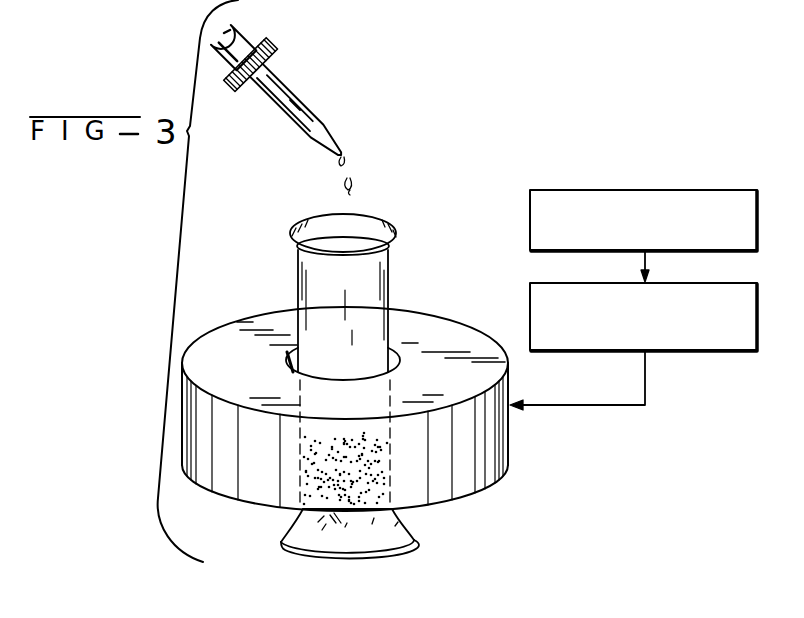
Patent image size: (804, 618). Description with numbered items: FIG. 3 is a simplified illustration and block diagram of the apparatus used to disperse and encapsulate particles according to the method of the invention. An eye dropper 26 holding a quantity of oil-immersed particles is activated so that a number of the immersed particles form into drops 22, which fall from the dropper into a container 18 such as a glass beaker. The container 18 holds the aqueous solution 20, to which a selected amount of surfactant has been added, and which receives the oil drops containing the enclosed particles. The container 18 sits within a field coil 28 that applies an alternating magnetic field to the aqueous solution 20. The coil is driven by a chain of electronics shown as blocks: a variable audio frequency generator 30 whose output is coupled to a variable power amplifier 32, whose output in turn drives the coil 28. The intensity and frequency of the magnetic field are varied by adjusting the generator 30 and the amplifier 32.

The container 18 is at (302, 512).
The aqueous solution 20 is at (320, 236).
The oil immersed drops 22 is at (350, 174).
The eye dropper 26 is at (302, 100).
The field coil 28 is at (490, 460).
The variable audio frequency (AF) generator 30 is at (543, 190).
The variable power amplifier 32 is at (540, 283).